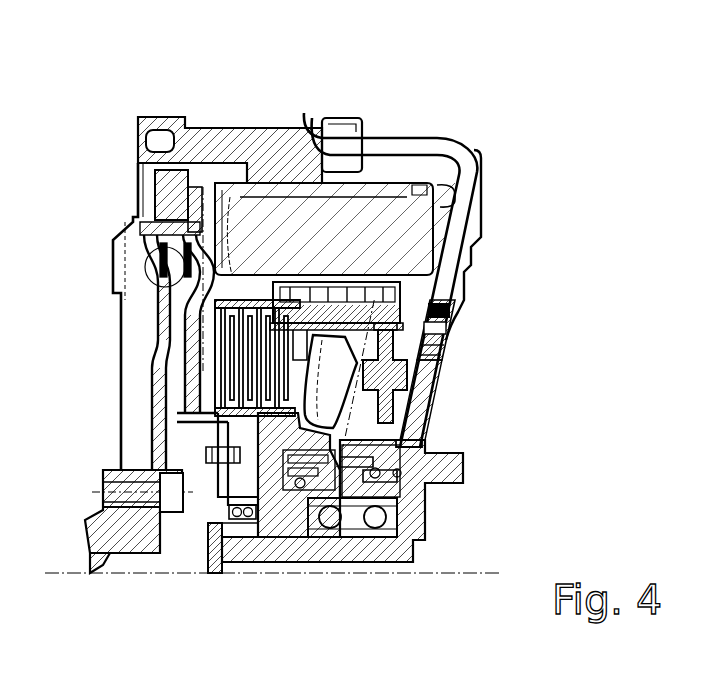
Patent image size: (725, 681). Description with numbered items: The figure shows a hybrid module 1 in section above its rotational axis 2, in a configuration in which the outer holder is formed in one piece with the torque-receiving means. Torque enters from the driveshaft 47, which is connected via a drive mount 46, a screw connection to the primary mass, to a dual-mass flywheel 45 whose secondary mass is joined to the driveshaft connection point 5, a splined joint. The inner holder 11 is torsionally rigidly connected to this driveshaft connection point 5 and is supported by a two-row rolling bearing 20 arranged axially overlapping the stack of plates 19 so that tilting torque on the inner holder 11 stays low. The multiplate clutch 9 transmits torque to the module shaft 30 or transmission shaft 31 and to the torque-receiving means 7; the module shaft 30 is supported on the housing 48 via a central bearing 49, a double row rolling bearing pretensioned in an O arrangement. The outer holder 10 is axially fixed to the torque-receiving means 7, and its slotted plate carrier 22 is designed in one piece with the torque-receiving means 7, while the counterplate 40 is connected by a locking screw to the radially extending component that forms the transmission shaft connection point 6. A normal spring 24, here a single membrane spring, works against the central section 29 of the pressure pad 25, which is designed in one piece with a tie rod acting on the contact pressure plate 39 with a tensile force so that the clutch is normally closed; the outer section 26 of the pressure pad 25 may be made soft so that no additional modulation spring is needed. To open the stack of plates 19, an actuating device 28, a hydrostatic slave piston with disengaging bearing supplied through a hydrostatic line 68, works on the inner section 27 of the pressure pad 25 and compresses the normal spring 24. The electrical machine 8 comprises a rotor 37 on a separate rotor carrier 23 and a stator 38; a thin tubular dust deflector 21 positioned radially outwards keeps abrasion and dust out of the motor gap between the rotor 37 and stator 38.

The hybrid module 1 is at (526, 118).
The rotational axis 2 is at (468, 575).
The driveshaft connection point 5 is at (180, 407).
The transmission shaft connection point 6 is at (268, 526).
The torque-receiving means 7 is at (452, 352).
The electrical machine 8 is at (528, 278).
The multiplate clutch 9 is at (460, 48).
The outer holder 10 is at (253, 84).
The inner holder 11 is at (305, 400).
The stack of plates 19 is at (322, 113).
The rolling bearing 20 is at (238, 521).
The dust deflector 21 is at (262, 400).
The plate carrier 22 is at (268, 280).
The rotor carrier 23 is at (415, 415).
The normal spring 24 is at (347, 422).
The pressure pad 25 is at (489, 84).
The outer section 26 is at (447, 200).
The inner section 27 is at (400, 250).
The actuating device 28 is at (298, 490).
The central section 29 is at (480, 165).
The module shaft 30 is at (415, 540).
The transmission shaft 31 is at (233, 548).
The rotor 37 is at (452, 322).
The stator 38 is at (455, 275).
The contact pressure plate 39 is at (240, 320).
The counterplate 40 is at (278, 320).
The dual-mass flywheel 45 is at (132, 244).
The drive mount 46 is at (150, 463).
The driveshaft 47 is at (92, 520).
The housing 48 is at (140, 122).
The central bearing 49 is at (343, 536).
The hydrostatic line 68 is at (445, 370).